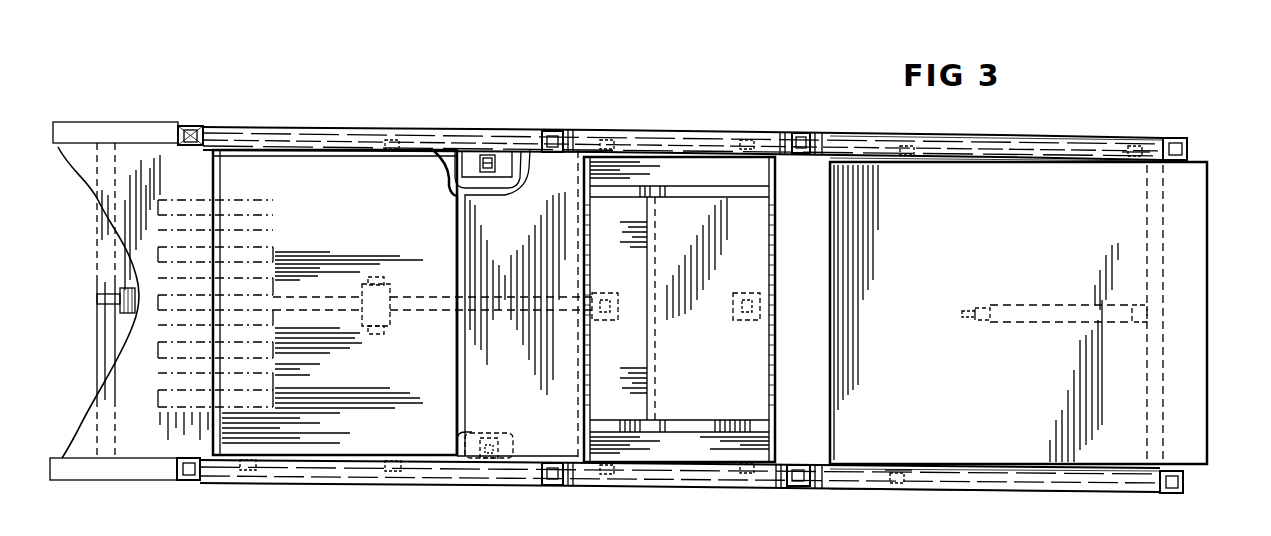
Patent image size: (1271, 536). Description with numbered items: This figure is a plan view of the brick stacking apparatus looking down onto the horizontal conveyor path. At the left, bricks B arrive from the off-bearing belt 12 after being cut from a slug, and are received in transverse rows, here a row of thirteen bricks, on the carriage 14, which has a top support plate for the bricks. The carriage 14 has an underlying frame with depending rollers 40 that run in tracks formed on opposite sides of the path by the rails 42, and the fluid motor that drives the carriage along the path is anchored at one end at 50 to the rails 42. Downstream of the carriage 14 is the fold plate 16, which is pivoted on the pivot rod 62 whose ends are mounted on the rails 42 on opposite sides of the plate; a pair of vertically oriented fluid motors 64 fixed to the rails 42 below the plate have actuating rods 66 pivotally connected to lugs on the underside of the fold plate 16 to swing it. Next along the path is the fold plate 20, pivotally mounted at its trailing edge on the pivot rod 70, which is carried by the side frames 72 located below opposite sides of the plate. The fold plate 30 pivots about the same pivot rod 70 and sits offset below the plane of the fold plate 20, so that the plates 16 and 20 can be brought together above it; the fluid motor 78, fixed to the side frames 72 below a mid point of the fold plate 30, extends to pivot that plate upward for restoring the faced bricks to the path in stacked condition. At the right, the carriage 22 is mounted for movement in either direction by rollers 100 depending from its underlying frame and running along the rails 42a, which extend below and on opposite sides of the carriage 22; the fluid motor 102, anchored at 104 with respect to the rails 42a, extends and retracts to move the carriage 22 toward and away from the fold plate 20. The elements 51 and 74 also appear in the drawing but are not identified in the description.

The off-bearing belt 12 is at (129, 441).
The carriage 14 is at (384, 359).
The fold plate 16 is at (494, 381).
The fold plate 20 is at (689, 357).
The carriage 22 is at (944, 363).
The fold plate 30 is at (603, 357).
The rollers 40 is at (392, 138).
The rails 42 is at (314, 483).
The rails 42a is at (1058, 142).
The motor anchor 50 is at (97, 299).
The bracket 51 is at (96, 342).
The pivot rod 62 is at (581, 149).
The fluid motors 64 is at (500, 160).
The actuating rods 66 is at (479, 156).
The pivot rod 70 is at (653, 259).
The side frames 72 is at (695, 443).
The hinge 74 is at (745, 292).
The fluid motor 78 is at (614, 291).
The rollers 100 is at (1140, 145).
The fluid motor 102 is at (1027, 324).
The motor anchor 104 is at (1155, 348).
The bricks B is at (268, 218).